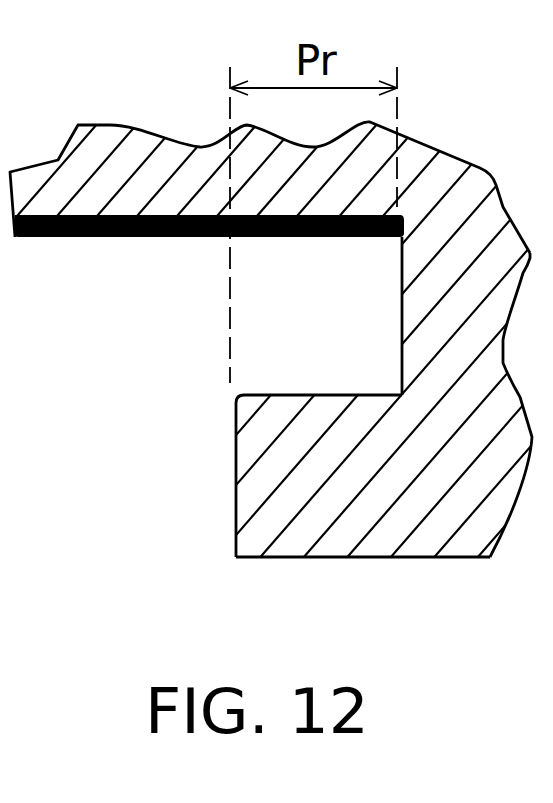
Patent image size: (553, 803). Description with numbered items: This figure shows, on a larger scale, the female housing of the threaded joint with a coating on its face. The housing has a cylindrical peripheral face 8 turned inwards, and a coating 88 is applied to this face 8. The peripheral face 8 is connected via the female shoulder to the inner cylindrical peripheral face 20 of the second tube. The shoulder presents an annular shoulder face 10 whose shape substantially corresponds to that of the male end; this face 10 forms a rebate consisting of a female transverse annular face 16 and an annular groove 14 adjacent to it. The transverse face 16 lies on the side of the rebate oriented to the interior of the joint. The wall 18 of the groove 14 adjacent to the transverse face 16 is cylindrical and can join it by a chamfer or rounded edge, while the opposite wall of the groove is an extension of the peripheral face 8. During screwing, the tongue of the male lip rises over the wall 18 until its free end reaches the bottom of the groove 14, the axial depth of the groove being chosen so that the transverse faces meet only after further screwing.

The coating 88 is at (135, 217).
The peripheral face 8 is at (87, 237).
The annular groove 14 is at (372, 297).
The wall of the groove 18 is at (313, 392).
The annular shoulder face 10 is at (212, 403).
The female transverse annular face 16 is at (233, 500).
The inner cylindrical peripheral face 20 is at (400, 557).